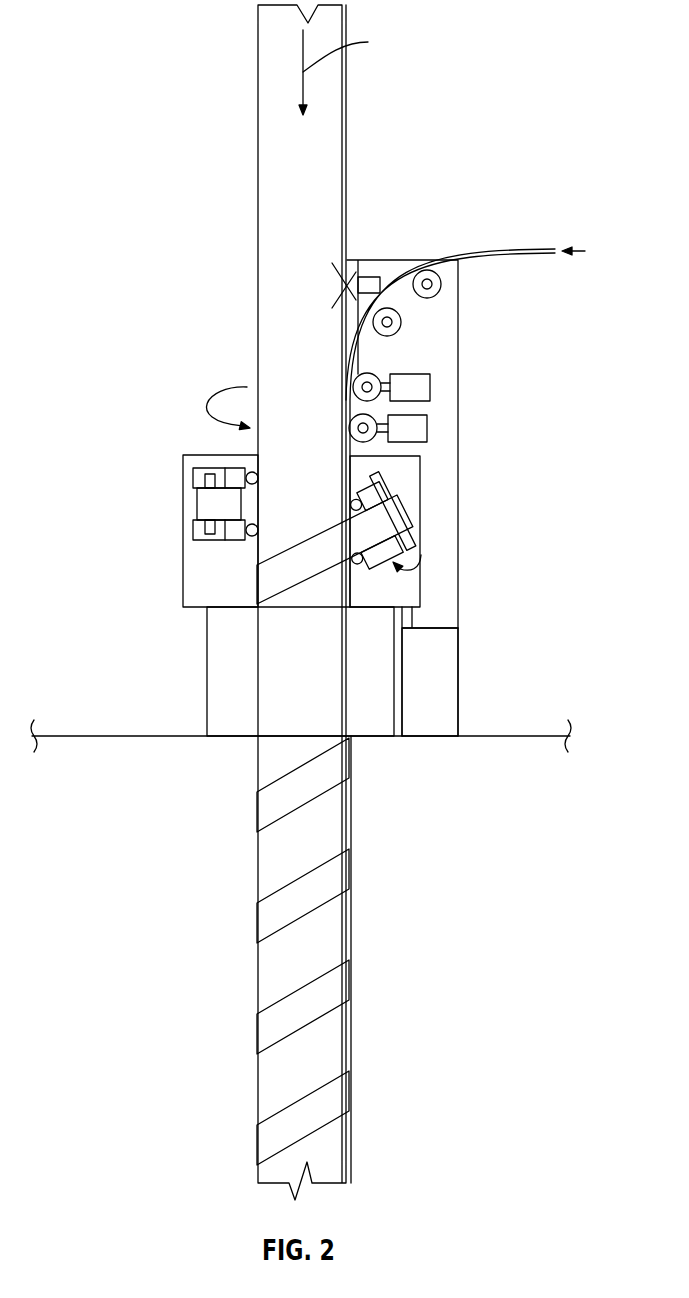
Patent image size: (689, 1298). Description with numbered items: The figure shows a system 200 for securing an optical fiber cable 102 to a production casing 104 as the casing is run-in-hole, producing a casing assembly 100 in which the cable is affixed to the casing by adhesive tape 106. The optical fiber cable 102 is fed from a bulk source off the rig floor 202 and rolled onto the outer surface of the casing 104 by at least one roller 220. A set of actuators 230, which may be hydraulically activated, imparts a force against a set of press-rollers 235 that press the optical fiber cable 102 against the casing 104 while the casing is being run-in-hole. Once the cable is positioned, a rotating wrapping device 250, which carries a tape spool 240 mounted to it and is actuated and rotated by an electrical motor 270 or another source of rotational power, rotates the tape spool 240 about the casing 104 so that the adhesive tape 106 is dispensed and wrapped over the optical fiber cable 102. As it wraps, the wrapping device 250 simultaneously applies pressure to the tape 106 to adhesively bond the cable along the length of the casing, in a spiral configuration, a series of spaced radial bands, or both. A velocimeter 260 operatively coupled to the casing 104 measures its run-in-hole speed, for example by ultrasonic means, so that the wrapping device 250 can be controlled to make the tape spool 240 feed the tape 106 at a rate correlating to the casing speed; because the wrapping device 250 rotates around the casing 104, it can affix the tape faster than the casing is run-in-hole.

The casing assembly 100 is at (297, 602).
The optical fiber cable 102 is at (555, 248).
The production casing 104 is at (262, 852).
The adhesive tape 106 is at (263, 588).
The system 200 is at (492, 566).
The rig floor 202 is at (499, 737).
The roller 220 is at (441, 284).
The actuators 230 is at (441, 387).
The press-rollers 235 is at (352, 387).
The tape spool 240 is at (190, 470).
The rotating wrapping device 250 is at (176, 423).
The velocimeter 260 is at (370, 277).
The electrical motor 270 is at (447, 657).